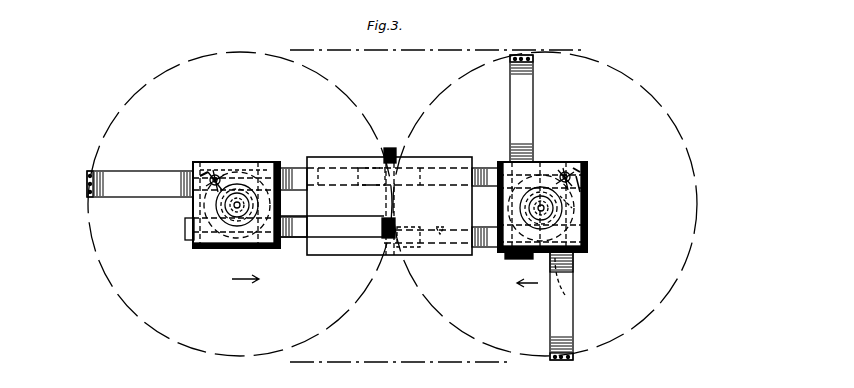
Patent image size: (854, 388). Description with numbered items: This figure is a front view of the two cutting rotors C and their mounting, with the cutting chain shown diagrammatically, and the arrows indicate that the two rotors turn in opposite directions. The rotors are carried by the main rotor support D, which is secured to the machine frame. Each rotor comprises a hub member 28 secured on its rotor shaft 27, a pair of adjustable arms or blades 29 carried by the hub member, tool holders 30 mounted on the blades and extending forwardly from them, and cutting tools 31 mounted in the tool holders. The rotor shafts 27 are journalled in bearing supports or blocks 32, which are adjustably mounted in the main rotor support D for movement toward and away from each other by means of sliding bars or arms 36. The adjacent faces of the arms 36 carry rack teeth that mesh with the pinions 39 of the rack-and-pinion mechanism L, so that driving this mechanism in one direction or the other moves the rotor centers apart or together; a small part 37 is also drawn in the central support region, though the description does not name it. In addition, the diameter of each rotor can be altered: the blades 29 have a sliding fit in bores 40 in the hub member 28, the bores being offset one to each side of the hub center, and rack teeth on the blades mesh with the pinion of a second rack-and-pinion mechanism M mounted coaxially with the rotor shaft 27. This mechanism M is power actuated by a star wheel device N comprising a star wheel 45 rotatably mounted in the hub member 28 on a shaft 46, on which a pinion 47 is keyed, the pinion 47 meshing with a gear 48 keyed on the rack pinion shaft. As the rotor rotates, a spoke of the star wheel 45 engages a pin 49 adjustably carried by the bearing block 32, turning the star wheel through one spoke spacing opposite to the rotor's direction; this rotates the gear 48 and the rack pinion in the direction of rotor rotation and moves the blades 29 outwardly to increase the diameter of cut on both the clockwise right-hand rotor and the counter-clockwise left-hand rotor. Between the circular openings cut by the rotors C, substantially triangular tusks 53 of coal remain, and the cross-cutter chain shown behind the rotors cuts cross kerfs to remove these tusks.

The rotor shaft 27 is at (193, 206).
The hub member 28 is at (266, 249).
The adjustable arms or blades 29 is at (115, 172).
The tool holder 30 is at (94, 170).
The cutting tool 31 is at (88, 176).
The bearing support or block 32 is at (273, 164).
The sliding bar or arm 36 is at (298, 167).
The catch 37 is at (438, 226).
The pinion 39 is at (372, 167).
The bore 40 is at (186, 229).
The star wheel 45 is at (213, 166).
The shaft 46 is at (592, 172).
The pinion 47 is at (580, 206).
The gear 48 is at (230, 170).
The pin 49 is at (206, 168).
The tusks of coal 53 is at (346, 63).
The cutting rotors C is at (116, 198).
The main rotor support D is at (432, 160).
The rack-and-pinion mechanism L is at (398, 165).
The rack-and-pinion mechanism M is at (213, 249).
The star wheel device N is at (226, 160).